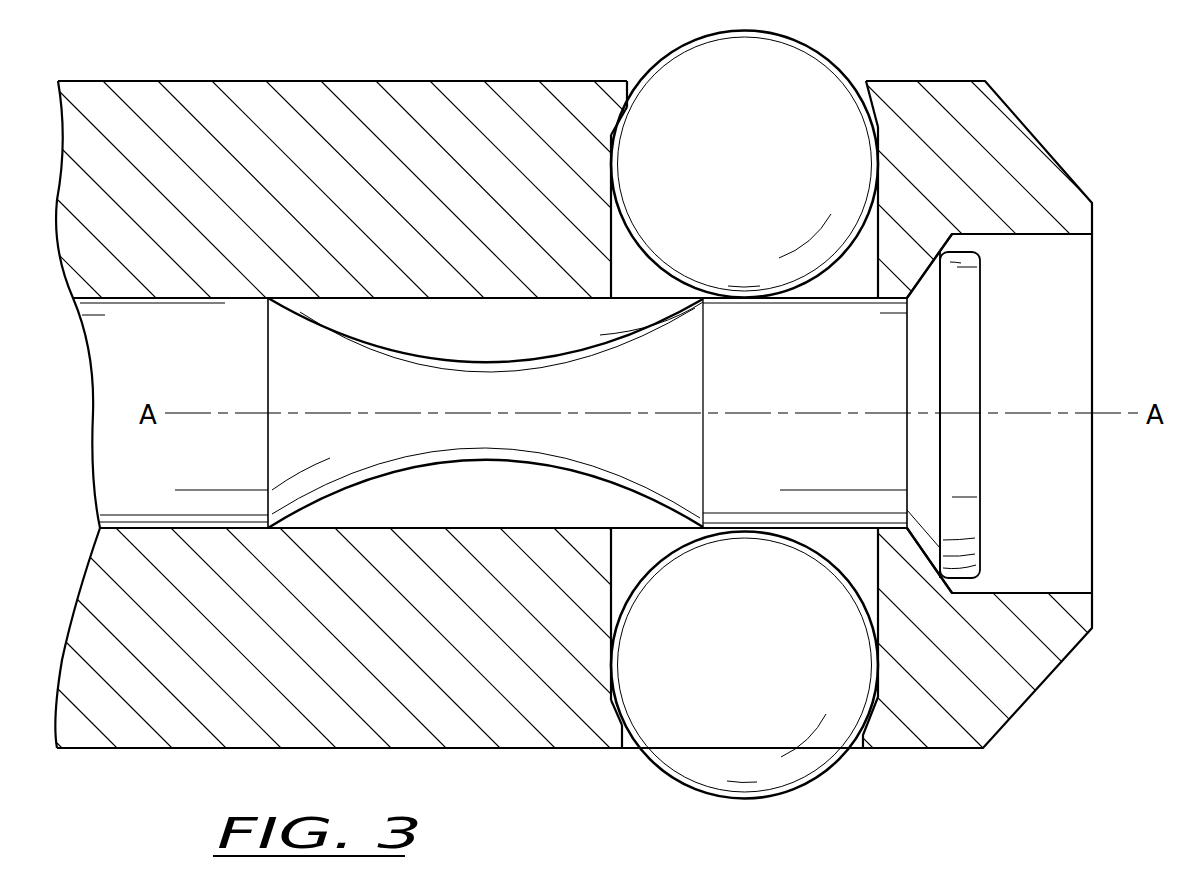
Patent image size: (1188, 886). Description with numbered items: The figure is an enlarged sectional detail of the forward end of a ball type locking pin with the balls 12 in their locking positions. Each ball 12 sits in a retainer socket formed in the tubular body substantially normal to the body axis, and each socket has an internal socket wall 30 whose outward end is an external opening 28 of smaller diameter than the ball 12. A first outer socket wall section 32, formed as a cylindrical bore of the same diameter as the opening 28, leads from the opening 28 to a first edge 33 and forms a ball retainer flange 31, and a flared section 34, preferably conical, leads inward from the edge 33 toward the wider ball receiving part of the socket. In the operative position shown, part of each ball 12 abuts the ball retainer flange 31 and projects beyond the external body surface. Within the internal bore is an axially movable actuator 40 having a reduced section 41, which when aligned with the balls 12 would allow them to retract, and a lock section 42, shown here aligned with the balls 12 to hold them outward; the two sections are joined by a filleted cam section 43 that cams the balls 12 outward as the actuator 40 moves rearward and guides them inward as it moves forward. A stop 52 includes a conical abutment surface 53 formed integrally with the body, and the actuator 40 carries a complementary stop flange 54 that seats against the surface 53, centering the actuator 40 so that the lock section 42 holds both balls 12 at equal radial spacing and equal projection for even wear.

The ball 12 is at (763, 176).
The opening 28 is at (627, 81).
The internal socket wall 30 is at (600, 181).
The ball retainer flange 31 is at (622, 88).
The first outer socket wall section 32 is at (859, 81).
The first edge 33 is at (624, 106).
The flared section 34 is at (888, 115).
The actuator 40 is at (334, 323).
The reduced section 41 is at (492, 388).
The lock section 42 is at (813, 372).
The filleted cam section 43 is at (640, 328).
The stop 52 is at (934, 287).
The abutment surface 53 is at (1000, 243).
The stop flange 54 is at (923, 451).